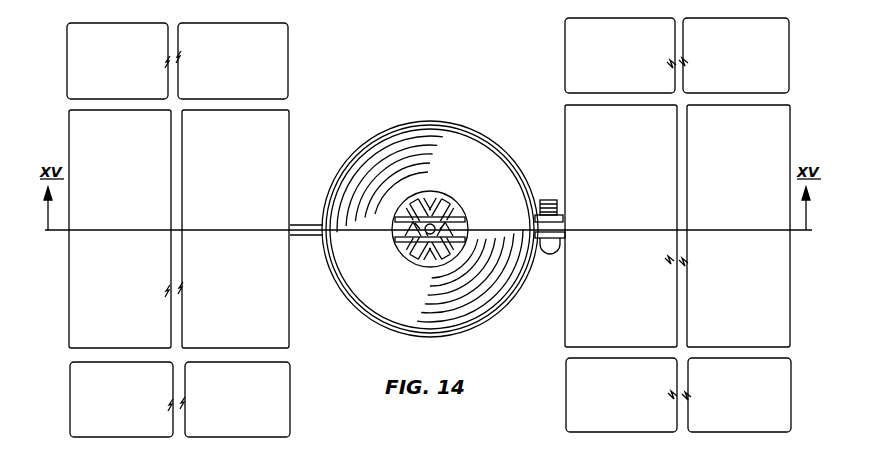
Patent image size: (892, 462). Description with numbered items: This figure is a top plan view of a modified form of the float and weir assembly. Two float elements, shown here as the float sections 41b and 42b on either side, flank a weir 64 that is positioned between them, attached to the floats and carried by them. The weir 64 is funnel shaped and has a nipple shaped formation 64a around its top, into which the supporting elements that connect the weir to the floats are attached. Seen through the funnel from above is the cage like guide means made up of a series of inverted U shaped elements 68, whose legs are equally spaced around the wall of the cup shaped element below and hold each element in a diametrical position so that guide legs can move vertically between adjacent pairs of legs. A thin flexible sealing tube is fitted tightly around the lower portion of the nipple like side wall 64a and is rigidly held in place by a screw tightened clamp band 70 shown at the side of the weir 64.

The left solar panel array 42b is at (291, 51).
The right solar panel array 41b is at (565, 50).
The weir 64 is at (376, 312).
The nipple shaped formation 64a is at (361, 288).
The inverted U shaped elements 68 is at (398, 252).
The screw tightened clamp band 70 is at (557, 213).